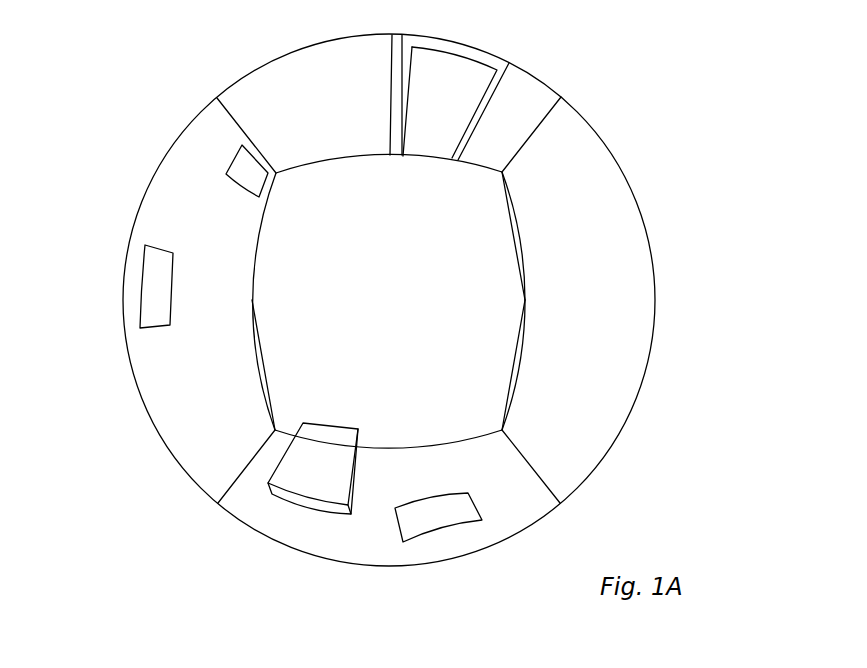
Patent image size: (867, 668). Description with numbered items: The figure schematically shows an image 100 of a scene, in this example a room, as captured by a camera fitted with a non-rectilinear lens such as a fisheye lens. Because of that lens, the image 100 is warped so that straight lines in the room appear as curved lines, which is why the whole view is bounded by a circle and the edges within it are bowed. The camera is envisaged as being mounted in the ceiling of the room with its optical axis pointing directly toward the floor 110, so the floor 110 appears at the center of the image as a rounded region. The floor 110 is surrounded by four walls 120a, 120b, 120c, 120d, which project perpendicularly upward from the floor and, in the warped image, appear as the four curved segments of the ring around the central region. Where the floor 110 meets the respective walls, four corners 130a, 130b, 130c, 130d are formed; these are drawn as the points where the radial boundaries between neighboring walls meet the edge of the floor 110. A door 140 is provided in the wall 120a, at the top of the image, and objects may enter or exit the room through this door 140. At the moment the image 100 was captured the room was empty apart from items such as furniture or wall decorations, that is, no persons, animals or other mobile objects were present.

The image 100 is at (138, 88).
The floor 110 is at (412, 312).
The wall 120a is at (320, 67).
The wall 120b is at (628, 308).
The wall 120c is at (310, 532).
The wall 120d is at (163, 392).
The corner 130a is at (500, 173).
The corner 130b is at (502, 430).
The corner 130c is at (275, 430).
The corner 130d is at (276, 173).
The door 140 is at (457, 72).